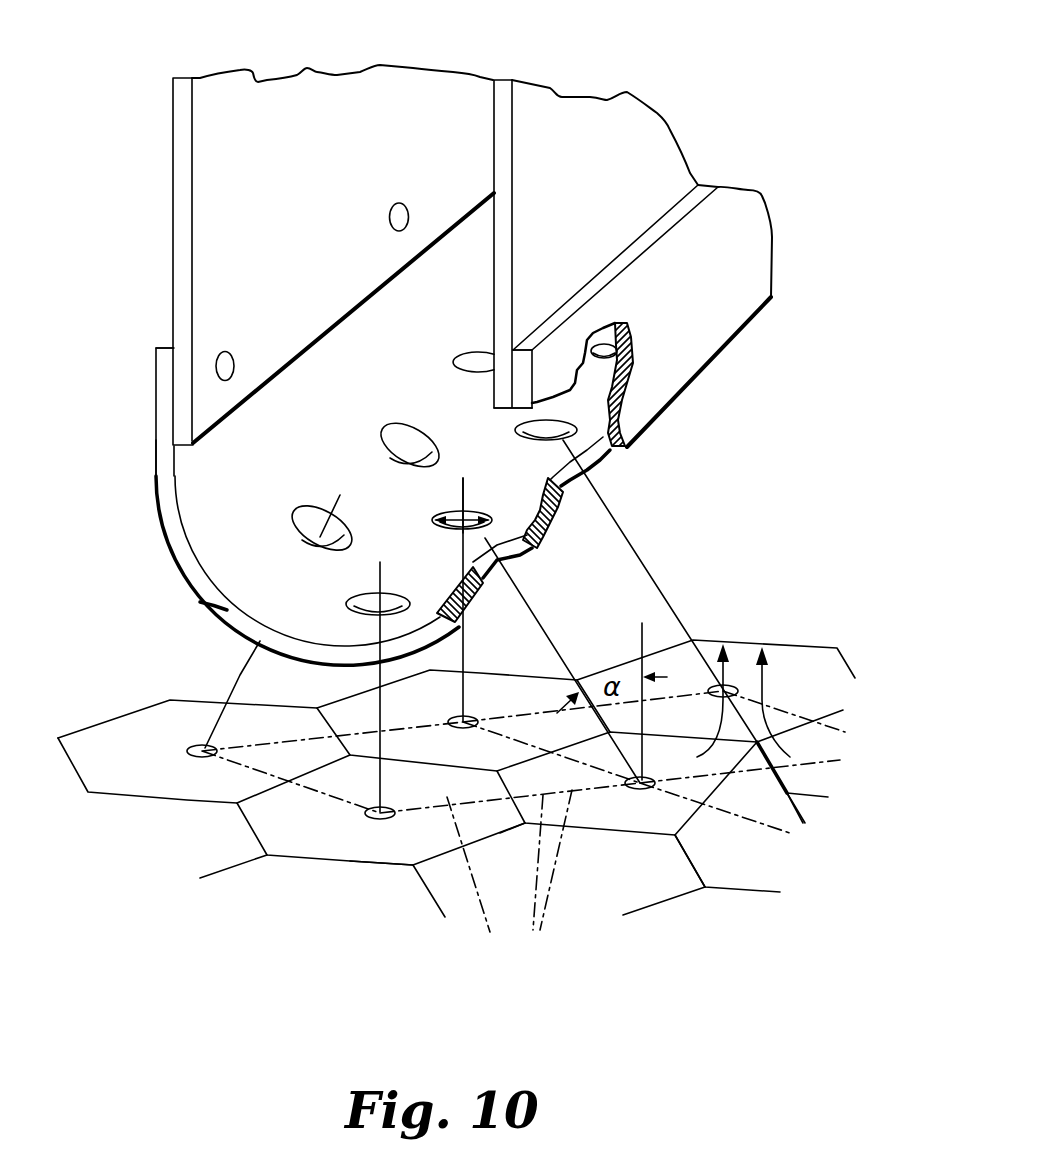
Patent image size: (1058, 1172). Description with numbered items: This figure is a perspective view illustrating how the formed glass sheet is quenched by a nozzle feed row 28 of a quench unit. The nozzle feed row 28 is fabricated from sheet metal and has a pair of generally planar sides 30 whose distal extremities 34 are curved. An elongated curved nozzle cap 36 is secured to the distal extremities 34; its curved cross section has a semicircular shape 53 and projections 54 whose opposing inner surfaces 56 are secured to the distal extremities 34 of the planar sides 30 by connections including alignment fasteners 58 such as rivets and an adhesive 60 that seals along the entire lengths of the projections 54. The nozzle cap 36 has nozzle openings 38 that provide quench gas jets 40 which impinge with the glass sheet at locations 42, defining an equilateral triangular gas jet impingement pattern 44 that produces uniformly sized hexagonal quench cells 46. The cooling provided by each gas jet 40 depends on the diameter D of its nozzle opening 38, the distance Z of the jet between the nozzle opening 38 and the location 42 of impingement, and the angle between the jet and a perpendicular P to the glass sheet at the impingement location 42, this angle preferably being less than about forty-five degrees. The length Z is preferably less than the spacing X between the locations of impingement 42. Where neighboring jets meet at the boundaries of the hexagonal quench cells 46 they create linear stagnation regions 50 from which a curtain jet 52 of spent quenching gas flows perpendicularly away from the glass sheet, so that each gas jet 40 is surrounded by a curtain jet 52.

The nozzle feed row 28 is at (520, 54).
The planar sides 30 is at (175, 130).
The distal extremities 34 is at (235, 267).
The curved nozzle cap 36 is at (152, 552).
The nozzle openings 38 is at (428, 530).
The quench gas jets 40 is at (480, 673).
The locations of impingement 42 is at (202, 752).
The equilateral triangular gas jet impingement pattern 44 is at (477, 885).
The hexagonal quench cells 46 is at (358, 865).
The linear stagnation regions 50 is at (677, 835).
The curtain jet 52 is at (735, 713).
The semicircular shape 53 is at (213, 604).
The projections 54 is at (156, 364).
The inner surfaces 56 is at (160, 372).
The alignment fasteners 58 is at (237, 362).
The adhesive 60 is at (173, 413).
The diameter D is at (462, 510).
The distance of the gas jet Z is at (480, 640).
The perpendicular P is at (652, 600).
The spacing X is at (551, 881).